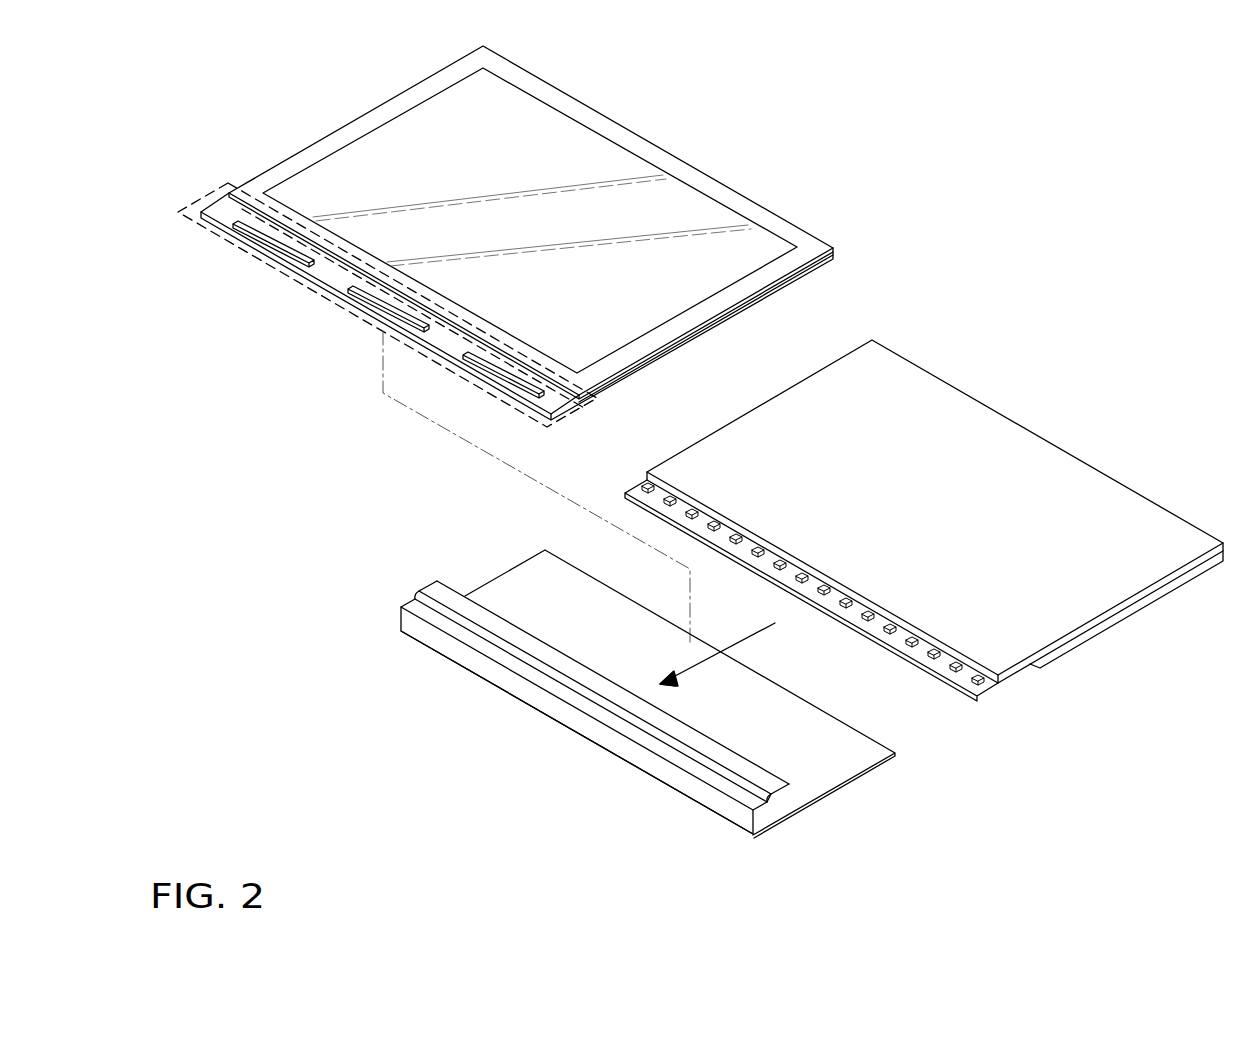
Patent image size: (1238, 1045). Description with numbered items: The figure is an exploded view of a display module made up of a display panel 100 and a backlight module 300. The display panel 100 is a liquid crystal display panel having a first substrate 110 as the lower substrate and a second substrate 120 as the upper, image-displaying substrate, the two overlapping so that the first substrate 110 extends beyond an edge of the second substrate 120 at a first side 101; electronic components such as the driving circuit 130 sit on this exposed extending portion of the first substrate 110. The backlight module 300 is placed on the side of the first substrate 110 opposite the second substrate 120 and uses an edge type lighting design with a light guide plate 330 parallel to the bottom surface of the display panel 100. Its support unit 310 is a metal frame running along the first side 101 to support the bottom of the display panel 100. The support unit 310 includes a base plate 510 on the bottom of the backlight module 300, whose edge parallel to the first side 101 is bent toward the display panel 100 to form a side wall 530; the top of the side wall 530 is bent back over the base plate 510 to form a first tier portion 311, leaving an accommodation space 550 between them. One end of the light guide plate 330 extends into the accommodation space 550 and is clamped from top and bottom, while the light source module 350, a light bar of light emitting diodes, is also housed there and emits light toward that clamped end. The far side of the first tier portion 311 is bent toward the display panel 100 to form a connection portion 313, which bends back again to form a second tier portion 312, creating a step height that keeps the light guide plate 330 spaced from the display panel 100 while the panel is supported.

The display panel 100 is at (578, 366).
The first substrate 110 is at (820, 265).
The second substrate 120 is at (812, 240).
The driving circuit 130 is at (262, 228).
The first side 101 is at (277, 296).
The backlight module 300 is at (812, 623).
The light guide plate 330 is at (1052, 480).
The light source module 350 is at (967, 679).
The support unit 310 is at (595, 713).
The first tier portion 311 is at (678, 757).
The second tier portion 312 is at (610, 693).
The connection portion 313 is at (647, 727).
The base plate 510 is at (777, 808).
The side wall 530 is at (695, 797).
The accommodation space 550 is at (827, 816).